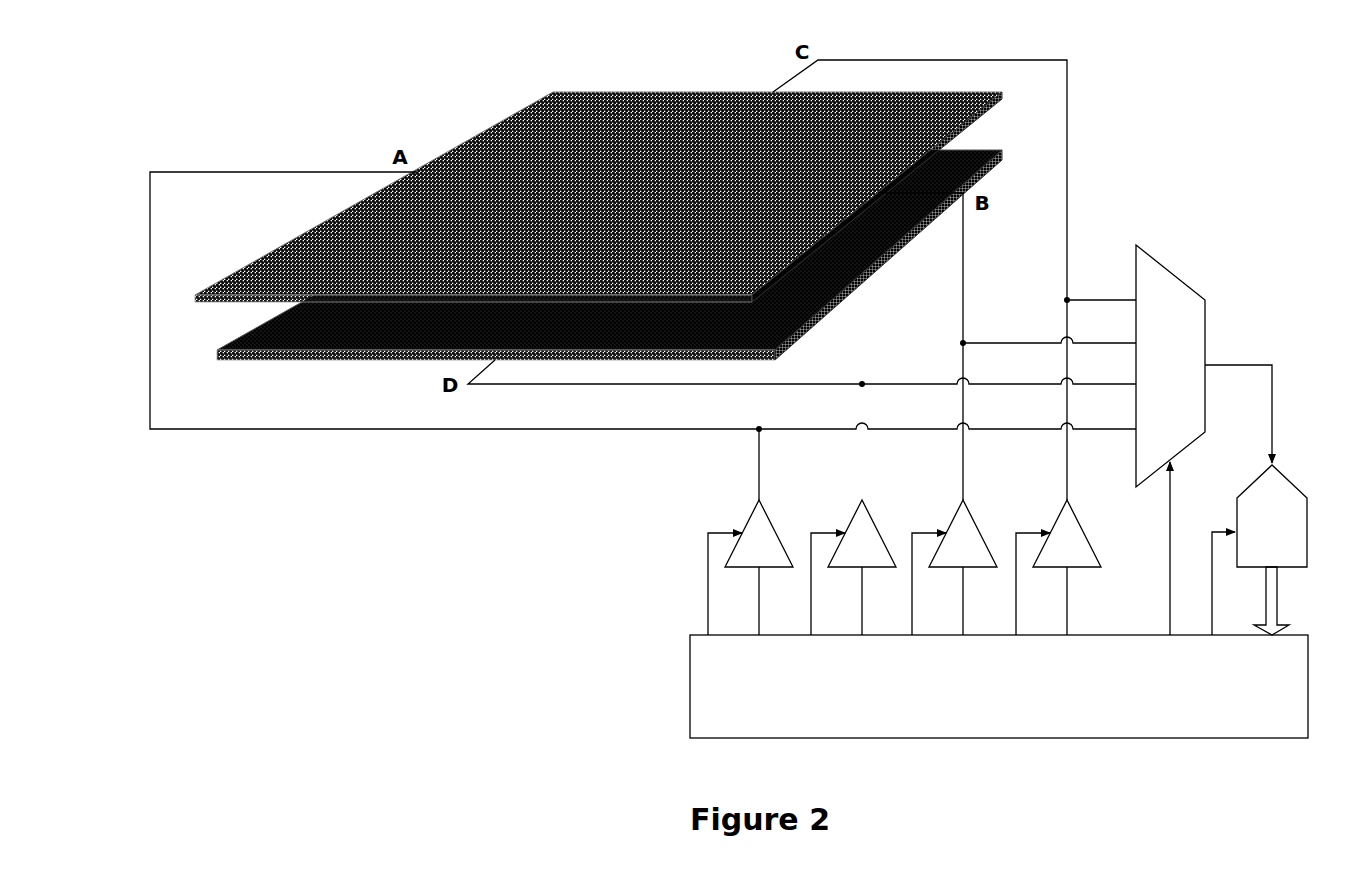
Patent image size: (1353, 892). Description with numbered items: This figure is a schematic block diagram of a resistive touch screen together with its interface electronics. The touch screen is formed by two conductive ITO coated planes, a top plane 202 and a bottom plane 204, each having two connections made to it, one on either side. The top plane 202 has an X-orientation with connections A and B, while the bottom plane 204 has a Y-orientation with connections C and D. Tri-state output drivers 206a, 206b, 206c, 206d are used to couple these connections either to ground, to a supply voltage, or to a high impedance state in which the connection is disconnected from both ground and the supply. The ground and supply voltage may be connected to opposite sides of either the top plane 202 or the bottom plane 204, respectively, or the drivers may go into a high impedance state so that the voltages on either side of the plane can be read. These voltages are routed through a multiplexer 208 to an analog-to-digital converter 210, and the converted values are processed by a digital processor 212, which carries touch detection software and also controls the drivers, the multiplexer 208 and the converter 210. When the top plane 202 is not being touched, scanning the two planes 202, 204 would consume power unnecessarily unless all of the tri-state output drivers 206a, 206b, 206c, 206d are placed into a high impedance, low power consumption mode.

The top plane 202 is at (520, 112).
The bottom plane 204 is at (243, 358).
The tri-state output driver 206a is at (748, 521).
The tri-state output driver 206b is at (952, 521).
The tri-state output driver 206c is at (1056, 521).
The tri-state output driver 206d is at (851, 521).
The multiplexer 208 is at (1165, 273).
The analog-to-digital converter 210 is at (1289, 478).
The digital processor 212 is at (690, 635).